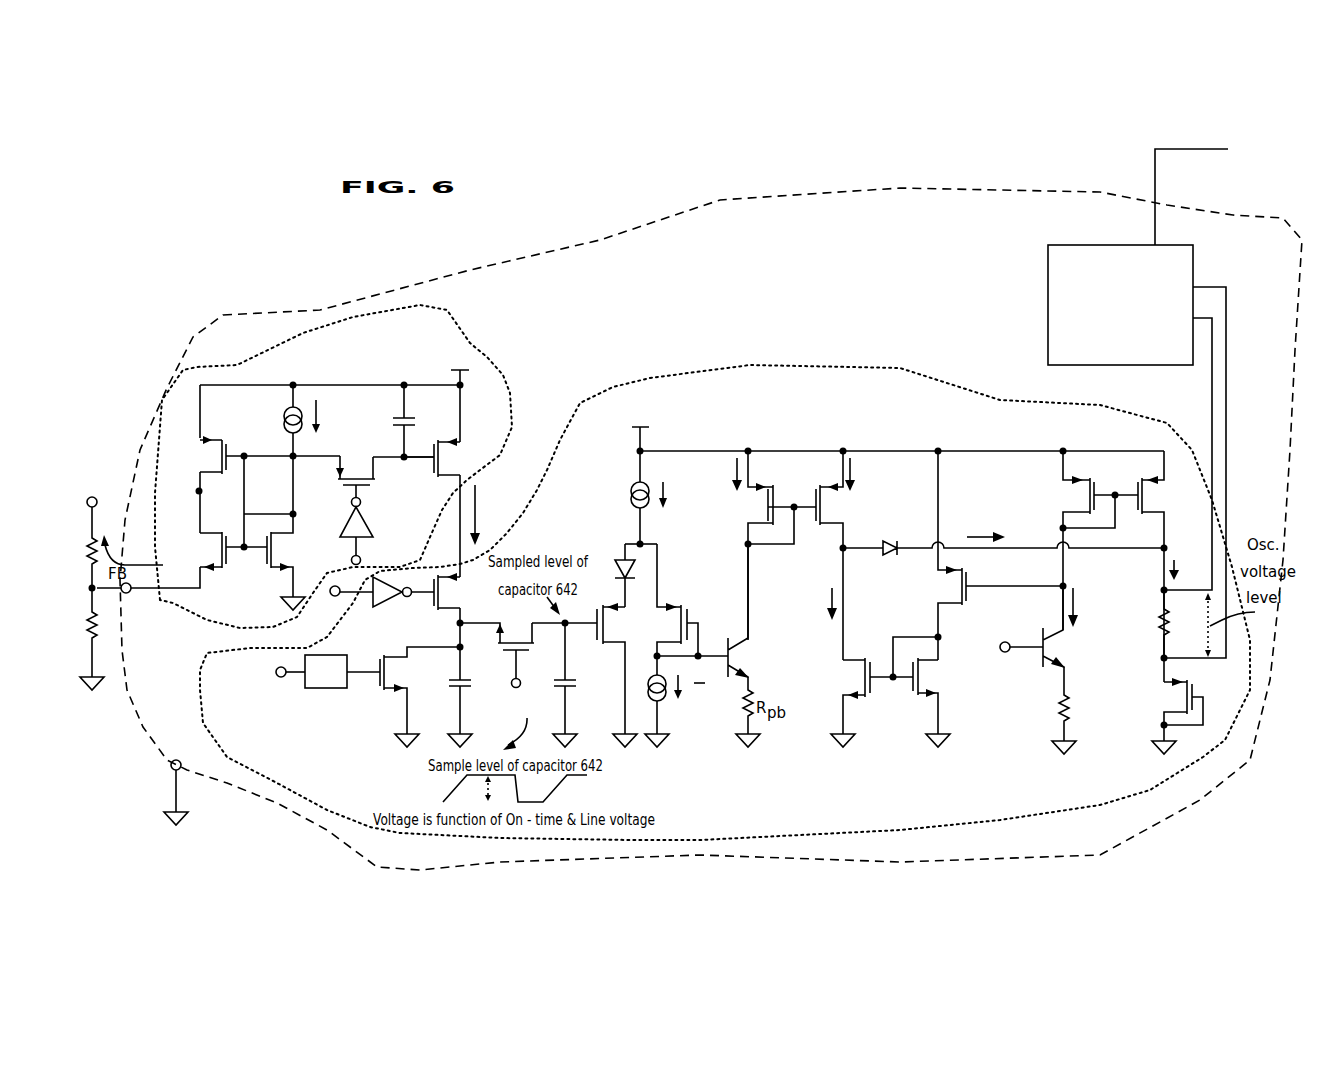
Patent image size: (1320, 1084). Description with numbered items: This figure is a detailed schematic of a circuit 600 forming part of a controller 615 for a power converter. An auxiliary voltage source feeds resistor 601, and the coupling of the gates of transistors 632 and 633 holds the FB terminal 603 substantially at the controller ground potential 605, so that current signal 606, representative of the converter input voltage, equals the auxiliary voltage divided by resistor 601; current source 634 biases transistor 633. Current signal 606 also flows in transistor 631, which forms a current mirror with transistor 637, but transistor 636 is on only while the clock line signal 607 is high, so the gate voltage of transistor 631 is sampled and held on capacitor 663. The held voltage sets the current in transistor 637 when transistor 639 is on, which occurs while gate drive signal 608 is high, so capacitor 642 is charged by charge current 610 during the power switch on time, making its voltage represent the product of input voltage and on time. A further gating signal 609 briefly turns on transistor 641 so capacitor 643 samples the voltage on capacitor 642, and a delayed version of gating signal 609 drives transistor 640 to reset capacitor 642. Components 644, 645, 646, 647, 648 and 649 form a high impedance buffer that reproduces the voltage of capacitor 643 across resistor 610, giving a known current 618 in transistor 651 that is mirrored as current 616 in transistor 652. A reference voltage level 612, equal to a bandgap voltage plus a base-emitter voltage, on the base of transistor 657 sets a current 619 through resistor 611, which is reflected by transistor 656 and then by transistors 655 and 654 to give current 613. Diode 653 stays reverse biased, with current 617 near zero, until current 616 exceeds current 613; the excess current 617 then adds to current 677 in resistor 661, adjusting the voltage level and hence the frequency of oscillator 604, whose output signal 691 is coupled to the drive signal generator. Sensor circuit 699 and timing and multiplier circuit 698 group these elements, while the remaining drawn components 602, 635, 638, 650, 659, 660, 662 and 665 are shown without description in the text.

The circuit 600 is at (126, 231).
The resistor 601 is at (70, 548).
The resistor 602 is at (75, 622).
The FB terminal 603 is at (87, 470).
The oscillator 604 is at (1065, 245).
The ground potential terminal 605 is at (168, 775).
The current signal 606 is at (122, 472).
The CLK-line signal 607 is at (411, 540).
The power switch gate drive signal 608 is at (313, 624).
The gating signal CLK-GF 609 is at (538, 688).
The charge current 610 is at (487, 498).
The resistor 611 is at (1092, 692).
The reference voltage level Vbg+Vbe 612 is at (1000, 641).
The current 613 is at (822, 595).
The controller 615 is at (223, 315).
The current 616 is at (842, 468).
The current 617 is at (970, 530).
The current 618 is at (730, 468).
The current 619 is at (1066, 600).
The transistor 631 is at (205, 452).
The transistor 632 is at (205, 548).
The transistor 633 is at (278, 550).
The current source 634 is at (280, 424).
The inverter 635 is at (362, 512).
The transistor 636 is at (345, 466).
The transistor 637 is at (450, 460).
The inverter 638 is at (376, 603).
The transistor 639 is at (448, 594).
The transistor 640 is at (396, 672).
The transistor 641 is at (517, 636).
The capacitor 642 is at (468, 674).
The capacitor 643 is at (578, 680).
The component 644 is at (606, 628).
The component 645 is at (662, 596).
The component 646 is at (613, 556).
The component 647 is at (628, 475).
The component 648 is at (668, 712).
The component 649 is at (730, 650).
The current 650 is at (705, 700).
The transistor 651 is at (760, 545).
The transistor 652 is at (824, 555).
The diode 653 is at (886, 537).
The transistor 654 is at (850, 680).
The transistor 655 is at (928, 680).
The transistor 656 is at (945, 590).
The transistor 657 is at (1060, 645).
The transistor 659 is at (1070, 500).
The transistor 660 is at (1150, 500).
The resistor 661 is at (1148, 606).
The transistor 662 is at (1176, 698).
The capacitor 663 is at (414, 422).
The delay circuit 665 is at (330, 690).
The current 677 is at (1174, 556).
The signal 691 is at (1150, 145).
The timing and multiplier circuit 698 is at (752, 366).
The sensor circuit 699 is at (487, 352).